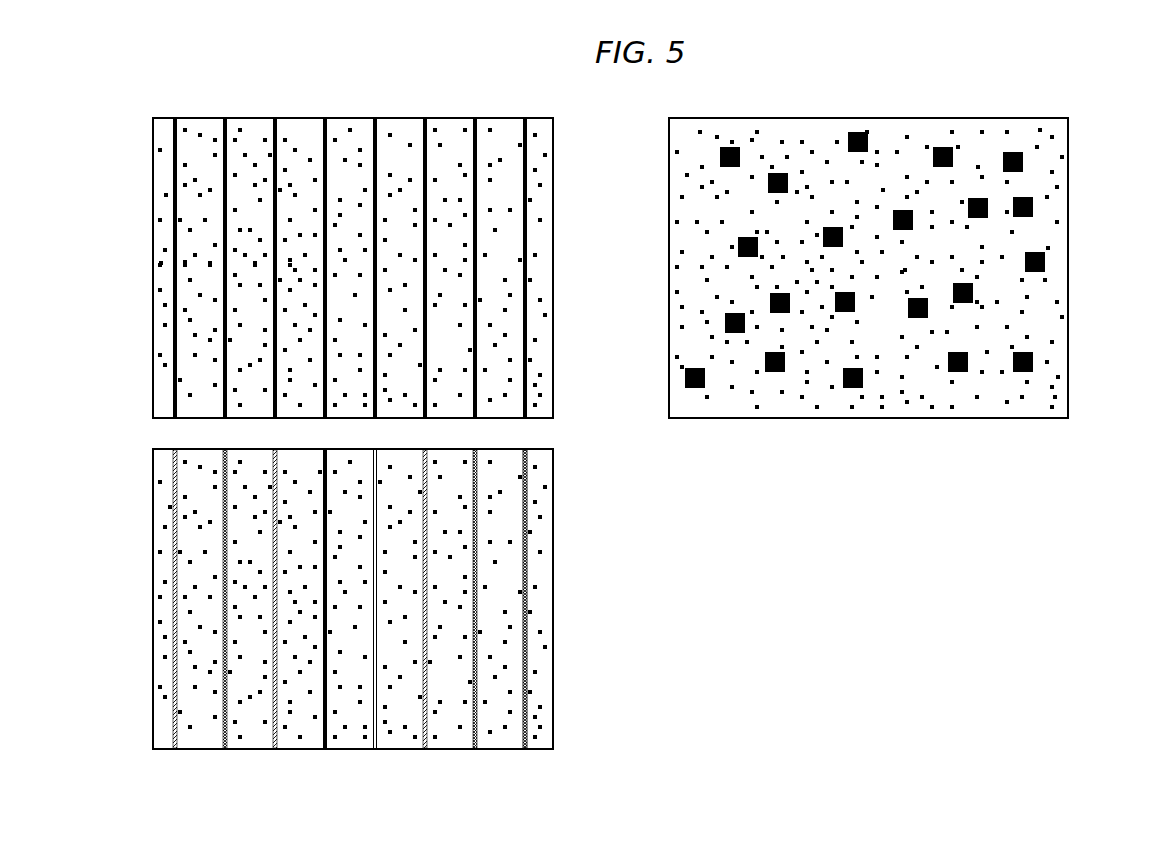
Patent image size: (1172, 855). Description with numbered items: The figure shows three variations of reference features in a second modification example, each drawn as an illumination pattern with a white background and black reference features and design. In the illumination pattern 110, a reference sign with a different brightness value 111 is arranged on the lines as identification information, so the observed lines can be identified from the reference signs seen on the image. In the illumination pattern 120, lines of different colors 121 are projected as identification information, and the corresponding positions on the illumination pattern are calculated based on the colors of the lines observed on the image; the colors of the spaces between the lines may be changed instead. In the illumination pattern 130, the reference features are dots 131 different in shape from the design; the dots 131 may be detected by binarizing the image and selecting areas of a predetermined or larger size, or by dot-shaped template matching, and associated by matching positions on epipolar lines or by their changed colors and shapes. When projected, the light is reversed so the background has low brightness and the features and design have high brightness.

The illumination pattern 110 is at (553, 142).
The reference sign with a different brightness value 111 is at (527, 320).
The illumination pattern 120 is at (553, 475).
The lines of different colors 121 is at (325, 750).
The illumination pattern 130 is at (1068, 142).
The dots 131 is at (1046, 263).